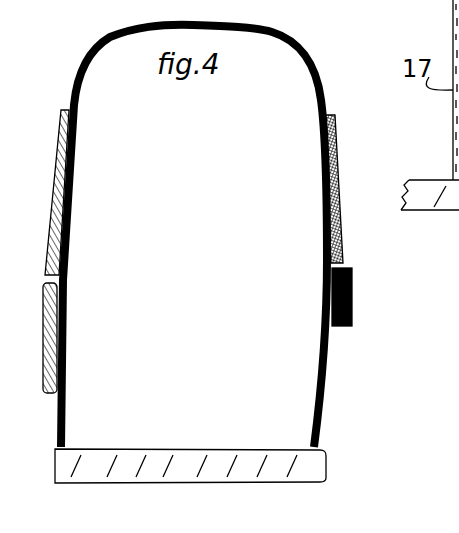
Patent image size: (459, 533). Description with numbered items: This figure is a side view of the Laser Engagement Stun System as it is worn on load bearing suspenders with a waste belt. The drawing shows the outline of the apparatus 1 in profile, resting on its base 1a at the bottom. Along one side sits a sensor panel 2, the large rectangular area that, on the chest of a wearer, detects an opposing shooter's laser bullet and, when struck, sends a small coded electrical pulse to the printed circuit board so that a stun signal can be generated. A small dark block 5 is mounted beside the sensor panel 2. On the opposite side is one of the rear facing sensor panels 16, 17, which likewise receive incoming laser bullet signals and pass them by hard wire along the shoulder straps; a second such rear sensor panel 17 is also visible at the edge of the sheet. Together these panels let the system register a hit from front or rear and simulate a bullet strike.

The housing wall 1 is at (326, 413).
The base plate 1a is at (312, 484).
The sensor panel 2 is at (341, 174).
The block element 5 is at (352, 310).
The rear sensor panel 16 is at (54, 149).
The rear sensor panel 17 is at (40, 332).